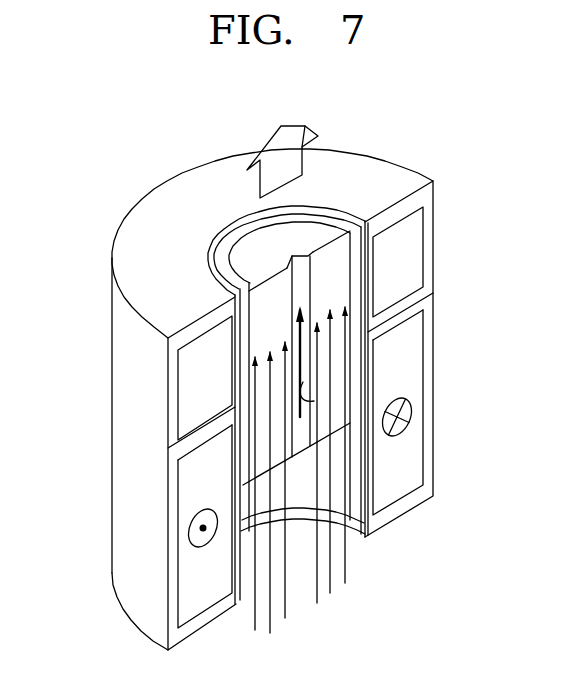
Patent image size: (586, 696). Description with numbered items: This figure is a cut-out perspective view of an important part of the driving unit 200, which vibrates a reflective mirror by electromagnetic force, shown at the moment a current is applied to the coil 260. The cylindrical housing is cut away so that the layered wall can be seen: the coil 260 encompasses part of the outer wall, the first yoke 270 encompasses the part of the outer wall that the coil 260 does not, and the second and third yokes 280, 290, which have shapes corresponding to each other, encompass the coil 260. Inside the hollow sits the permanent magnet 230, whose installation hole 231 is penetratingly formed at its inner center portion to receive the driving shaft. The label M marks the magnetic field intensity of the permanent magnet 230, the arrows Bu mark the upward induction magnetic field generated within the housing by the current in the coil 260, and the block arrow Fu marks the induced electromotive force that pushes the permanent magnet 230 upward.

The driving unit 200 is at (108, 182).
The permanent magnet 230 is at (348, 296).
The installation hole 231 is at (314, 401).
The coil 260 is at (395, 493).
The first yoke 270 is at (428, 247).
The second yoke 280 is at (428, 355).
The third yoke 290 is at (428, 453).